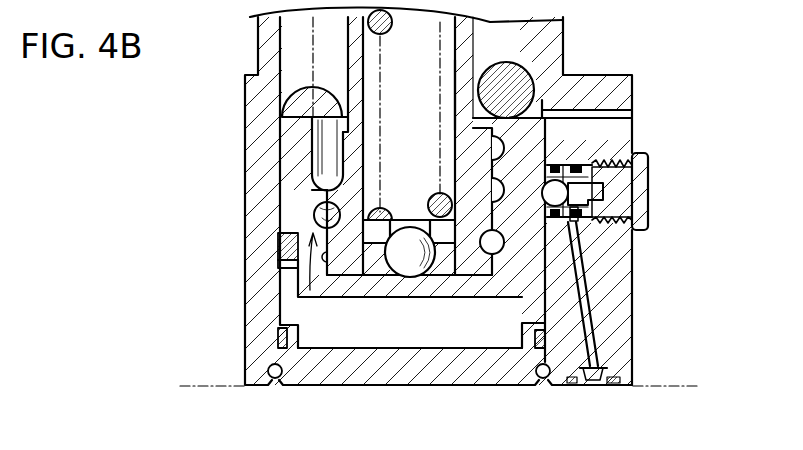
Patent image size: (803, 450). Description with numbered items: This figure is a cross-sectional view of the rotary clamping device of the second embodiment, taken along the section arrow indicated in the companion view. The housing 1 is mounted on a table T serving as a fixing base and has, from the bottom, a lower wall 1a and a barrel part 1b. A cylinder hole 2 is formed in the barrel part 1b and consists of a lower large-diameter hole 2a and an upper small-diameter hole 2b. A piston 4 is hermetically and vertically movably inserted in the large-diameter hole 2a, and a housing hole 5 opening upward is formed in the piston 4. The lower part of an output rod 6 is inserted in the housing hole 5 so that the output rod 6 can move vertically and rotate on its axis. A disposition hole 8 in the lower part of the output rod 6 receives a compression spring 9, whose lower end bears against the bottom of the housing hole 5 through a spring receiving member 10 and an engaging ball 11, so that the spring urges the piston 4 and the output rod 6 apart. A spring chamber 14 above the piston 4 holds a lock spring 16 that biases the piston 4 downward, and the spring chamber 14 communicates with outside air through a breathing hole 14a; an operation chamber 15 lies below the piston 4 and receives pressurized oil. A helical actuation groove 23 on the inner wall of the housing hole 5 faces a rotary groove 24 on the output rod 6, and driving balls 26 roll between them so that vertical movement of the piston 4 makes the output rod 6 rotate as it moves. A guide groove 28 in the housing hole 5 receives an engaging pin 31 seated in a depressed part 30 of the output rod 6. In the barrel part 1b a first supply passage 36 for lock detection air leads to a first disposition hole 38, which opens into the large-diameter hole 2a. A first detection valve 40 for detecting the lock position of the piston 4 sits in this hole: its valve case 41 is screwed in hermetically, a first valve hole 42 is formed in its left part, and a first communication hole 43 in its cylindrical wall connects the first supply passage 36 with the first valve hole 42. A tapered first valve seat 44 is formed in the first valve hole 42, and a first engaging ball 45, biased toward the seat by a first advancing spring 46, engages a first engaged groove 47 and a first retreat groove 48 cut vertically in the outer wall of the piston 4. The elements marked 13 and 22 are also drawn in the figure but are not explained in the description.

The housing 1 is at (440, 201).
The lower wall 1a is at (300, 360).
The barrel part 1b is at (602, 83).
The cylinder hole 2 is at (421, 240).
The large-diameter hole 2a is at (543, 305).
The small-diameter hole 2b is at (535, 47).
The piston 4 is at (310, 290).
The housing hole 5 is at (457, 127).
The output rod 6 is at (472, 45).
The disposition hole 8 is at (455, 82).
The compression spring 9 is at (380, 34).
The spring receiving member 10 is at (378, 226).
The engaging ball 11 is at (410, 252).
The flow passage 13 is at (435, 316).
The spring chamber 14 is at (300, 18).
The breathing hole 14a is at (585, 113).
The operation chamber 15 is at (335, 333).
The lock spring 16 is at (307, 98).
The seal 22 is at (298, 297).
The actuation groove 23 is at (307, 220).
The rotary groove 24 is at (315, 207).
The driving balls 26 is at (310, 212).
The guide groove 28 is at (327, 167).
The depressed part 30 is at (343, 152).
The engaging pin 31 is at (335, 148).
The first supply passage 36 is at (577, 290).
The first disposition hole 38 is at (630, 208).
The first detection valve 40 is at (660, 170).
The valve case 41 is at (628, 182).
The first valve hole 42 is at (620, 208).
The first communication hole 43 is at (575, 214).
The first valve seat 44 is at (561, 169).
The first engaging ball 45 is at (597, 169).
The first advancing spring 46 is at (635, 155).
The first engaged groove 47 is at (537, 192).
The first retreat groove 48 is at (533, 155).
The table T is at (667, 386).